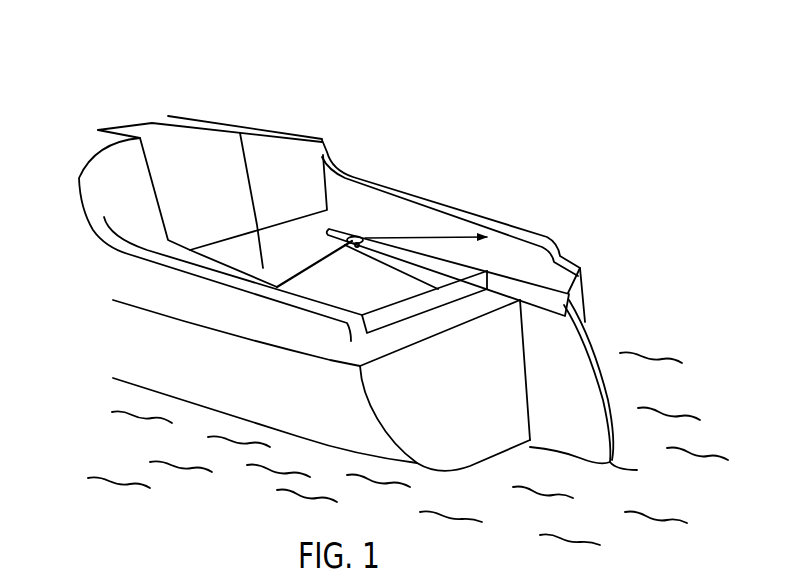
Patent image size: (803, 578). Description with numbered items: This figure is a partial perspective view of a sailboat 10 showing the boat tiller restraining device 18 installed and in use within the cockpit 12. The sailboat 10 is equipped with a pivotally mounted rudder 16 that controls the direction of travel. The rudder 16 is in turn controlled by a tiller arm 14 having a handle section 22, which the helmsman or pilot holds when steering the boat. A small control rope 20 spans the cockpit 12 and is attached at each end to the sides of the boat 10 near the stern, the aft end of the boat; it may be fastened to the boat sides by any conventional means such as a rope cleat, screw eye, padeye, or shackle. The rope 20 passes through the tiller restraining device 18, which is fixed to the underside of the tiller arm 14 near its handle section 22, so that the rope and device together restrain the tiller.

The sailboat 10 is at (462, 185).
The cockpit 12 is at (383, 210).
The tiller arm 14 is at (470, 266).
The rudder 16 is at (603, 393).
The tiller restraining device 18 is at (357, 253).
The control rope 20 is at (320, 259).
The handle section 22 is at (351, 236).